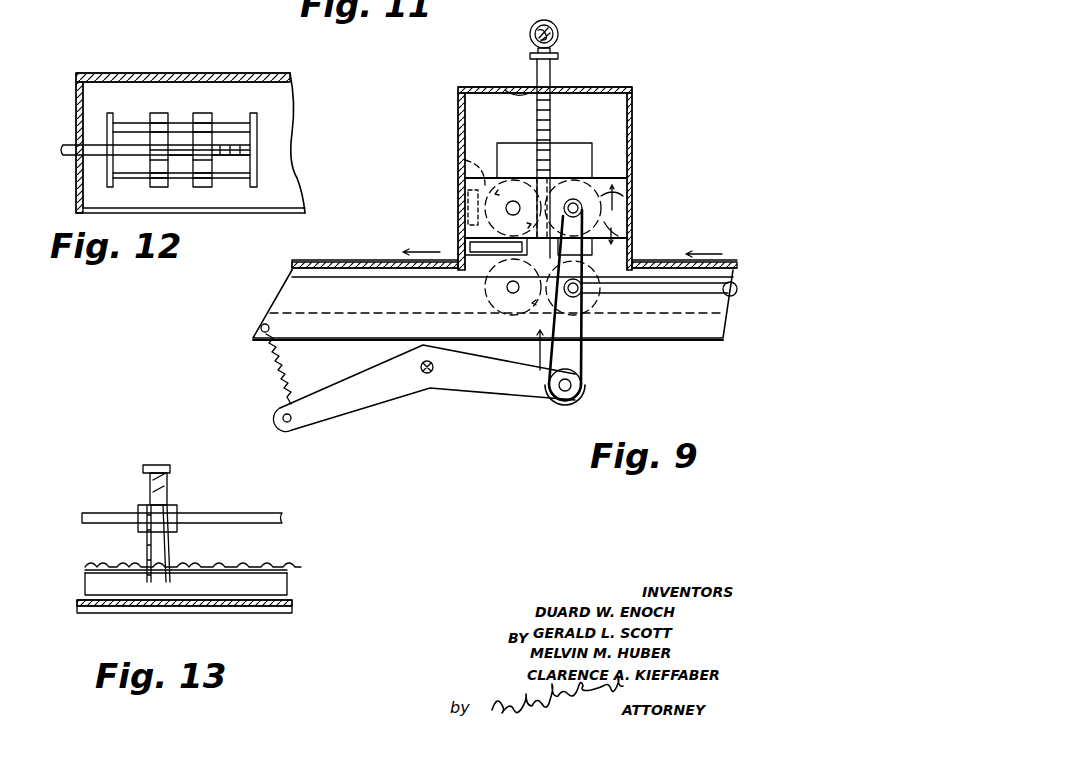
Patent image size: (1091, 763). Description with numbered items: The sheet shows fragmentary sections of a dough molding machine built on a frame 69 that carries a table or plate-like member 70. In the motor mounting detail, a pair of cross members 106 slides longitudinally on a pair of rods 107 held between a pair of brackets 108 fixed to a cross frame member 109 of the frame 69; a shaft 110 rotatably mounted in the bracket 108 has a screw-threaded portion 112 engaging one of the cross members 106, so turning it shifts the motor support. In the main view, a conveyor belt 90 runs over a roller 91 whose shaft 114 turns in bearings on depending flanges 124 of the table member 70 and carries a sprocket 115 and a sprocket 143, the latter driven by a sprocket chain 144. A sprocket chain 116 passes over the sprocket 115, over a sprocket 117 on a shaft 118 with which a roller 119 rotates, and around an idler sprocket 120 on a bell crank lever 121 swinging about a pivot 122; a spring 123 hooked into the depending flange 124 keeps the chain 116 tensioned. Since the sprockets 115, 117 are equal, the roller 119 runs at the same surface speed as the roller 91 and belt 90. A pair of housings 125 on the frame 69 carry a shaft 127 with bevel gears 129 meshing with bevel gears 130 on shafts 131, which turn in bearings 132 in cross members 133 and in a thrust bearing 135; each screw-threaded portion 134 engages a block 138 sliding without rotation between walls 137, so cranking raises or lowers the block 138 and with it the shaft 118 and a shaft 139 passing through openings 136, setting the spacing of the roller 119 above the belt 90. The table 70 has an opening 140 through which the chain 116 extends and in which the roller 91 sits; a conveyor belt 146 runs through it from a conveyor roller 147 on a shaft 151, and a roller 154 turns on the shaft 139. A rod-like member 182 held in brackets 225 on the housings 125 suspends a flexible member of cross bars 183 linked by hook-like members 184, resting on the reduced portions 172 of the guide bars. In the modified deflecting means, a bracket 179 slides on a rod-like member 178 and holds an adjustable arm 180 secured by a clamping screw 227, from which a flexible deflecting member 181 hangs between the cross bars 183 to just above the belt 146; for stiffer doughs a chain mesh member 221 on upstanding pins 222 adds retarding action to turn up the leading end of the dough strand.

In FIG. 12, the frame 69 is at (78, 182).
In FIG. 9, the table member 70 is at (292, 262).
In FIG. 13, the table member 70 is at (270, 612).
In FIG. 9, the conveyor belt 90 is at (728, 262).
In FIG. 9, the roller 91 is at (622, 255).
In FIG. 12, the cross members 106 is at (200, 113).
In FIG. 12, the rods 107 is at (258, 96).
In FIG. 12, the brackets 108 is at (108, 135).
In FIG. 12, the cross frame member 109 is at (122, 86).
In FIG. 12, the shaft 110 is at (70, 148).
In FIG. 12, the screw-threaded portion 112 is at (238, 162).
In FIG. 9, the shaft 114 is at (590, 301).
In FIG. 9, the sprocket 115 is at (578, 300).
In FIG. 9, the sprocket chain 116 is at (583, 363).
In FIG. 9, the sprocket 117 is at (598, 230).
In FIG. 9, the shaft 118 is at (583, 205).
In FIG. 9, the roller 119 is at (568, 176).
In FIG. 9, the idler sprocket 120 is at (583, 398).
In FIG. 9, the bell crank lever 121 is at (520, 394).
In FIG. 9, the pivot 122 is at (428, 373).
In FIG. 9, the spring 123 is at (272, 371).
In FIG. 9, the depending flange 124 is at (290, 287).
In FIG. 9, the housings 125 is at (629, 108).
In FIG. 9, the shaft 127 is at (530, 36).
In FIG. 9, the bevel gears 129 is at (546, 24).
In FIG. 9, the bevel gears 130 is at (559, 55).
In FIG. 9, the shafts 131 is at (551, 71).
In FIG. 9, the bearings 132 is at (522, 92).
In FIG. 9, the cross members 133 is at (608, 88).
In FIG. 9, the screw-threaded portion 134 is at (548, 131).
In FIG. 9, the thrust bearing 135 is at (528, 252).
In FIG. 9, the openings 136 is at (495, 155).
In FIG. 9, the walls 137 is at (458, 118).
In FIG. 9, the block 138 is at (472, 157).
In FIG. 9, the shaft 139 is at (513, 200).
In FIG. 9, the opening 140 is at (498, 282).
In FIG. 9, the sprocket 143 is at (590, 292).
In FIG. 9, the sprocket chain 144 is at (731, 294).
In FIG. 9, the conveyor belt 146 is at (345, 260).
In FIG. 13, the conveyor belt 146 is at (194, 606).
In FIG. 9, the conveyor roller 147 is at (520, 317).
In FIG. 9, the shaft 151 is at (496, 296).
In FIG. 9, the roller 154 is at (466, 222).
In FIG. 13, the reduced portions 172 is at (290, 585).
In FIG. 13, the rod-like member 178 is at (275, 516).
In FIG. 13, the bracket 179 is at (170, 497).
In FIG. 13, the arm 180 is at (170, 487).
In FIG. 13, the flexible deflecting member 181 is at (175, 535).
In FIG. 9, the rod-like member 182 is at (465, 185).
In FIG. 13, the cross bars 183 is at (293, 568).
In FIG. 13, the hook-like members 184 is at (118, 565).
In FIG. 13, the chain mesh member 221 is at (140, 530).
In FIG. 13, the upstanding pins 222 is at (143, 480).
In FIG. 9, the brackets 225 is at (468, 202).
In FIG. 13, the clamping screw 227 is at (155, 468).